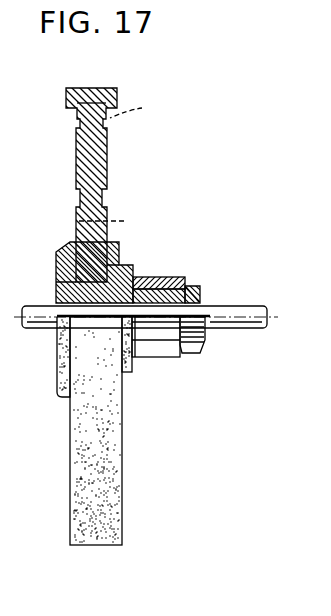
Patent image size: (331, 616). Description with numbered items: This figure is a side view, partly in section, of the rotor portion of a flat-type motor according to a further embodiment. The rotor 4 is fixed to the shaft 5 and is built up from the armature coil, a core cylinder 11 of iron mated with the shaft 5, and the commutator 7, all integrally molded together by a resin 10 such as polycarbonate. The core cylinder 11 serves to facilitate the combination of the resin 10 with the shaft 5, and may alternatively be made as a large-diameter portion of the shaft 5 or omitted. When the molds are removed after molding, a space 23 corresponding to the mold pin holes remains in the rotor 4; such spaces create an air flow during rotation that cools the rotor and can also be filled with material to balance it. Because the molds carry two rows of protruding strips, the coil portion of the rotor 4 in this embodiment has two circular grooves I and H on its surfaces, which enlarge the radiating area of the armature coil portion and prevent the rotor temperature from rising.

The rotor 4 is at (101, 88).
The space 23 is at (124, 165).
The circular groove I is at (107, 127).
The circular groove H is at (103, 195).
The resin 10 is at (73, 241).
The commutator 7 is at (150, 277).
The core cylinder 11 is at (57, 296).
The shaft 5 is at (238, 305).